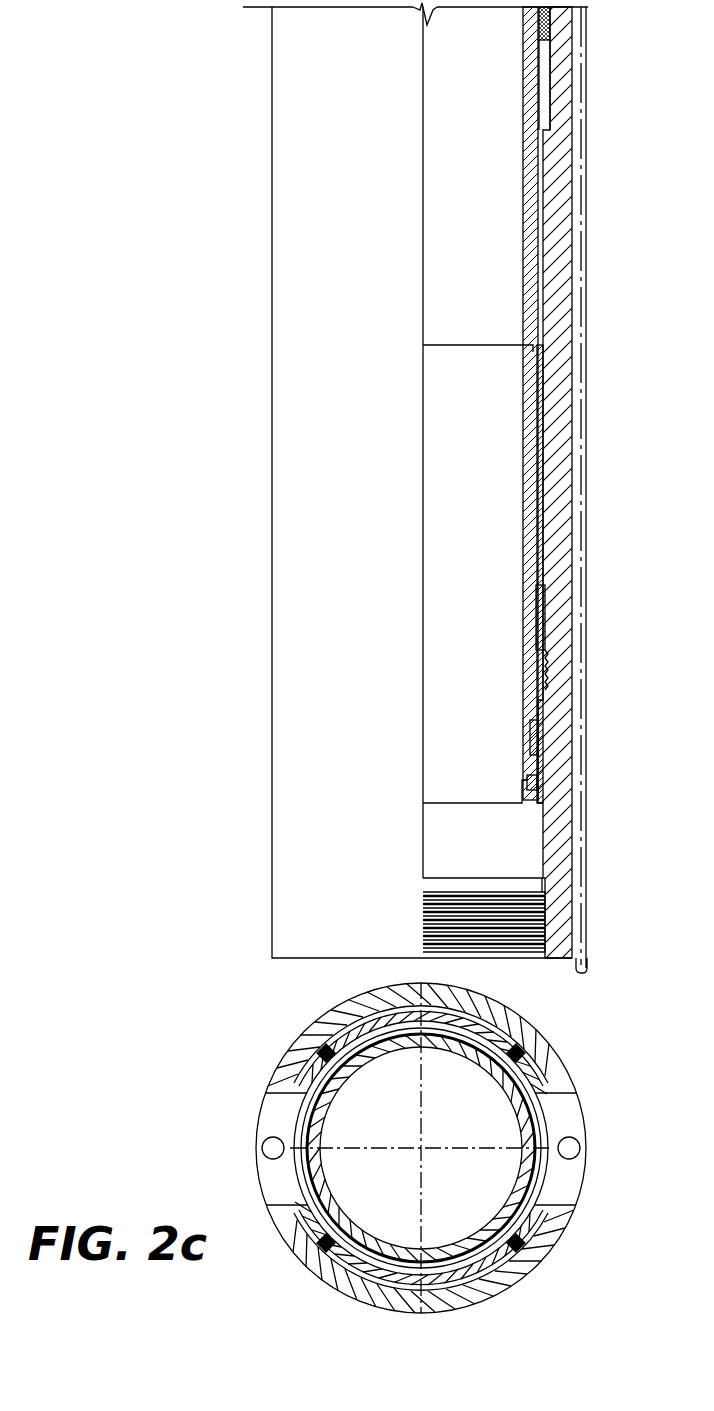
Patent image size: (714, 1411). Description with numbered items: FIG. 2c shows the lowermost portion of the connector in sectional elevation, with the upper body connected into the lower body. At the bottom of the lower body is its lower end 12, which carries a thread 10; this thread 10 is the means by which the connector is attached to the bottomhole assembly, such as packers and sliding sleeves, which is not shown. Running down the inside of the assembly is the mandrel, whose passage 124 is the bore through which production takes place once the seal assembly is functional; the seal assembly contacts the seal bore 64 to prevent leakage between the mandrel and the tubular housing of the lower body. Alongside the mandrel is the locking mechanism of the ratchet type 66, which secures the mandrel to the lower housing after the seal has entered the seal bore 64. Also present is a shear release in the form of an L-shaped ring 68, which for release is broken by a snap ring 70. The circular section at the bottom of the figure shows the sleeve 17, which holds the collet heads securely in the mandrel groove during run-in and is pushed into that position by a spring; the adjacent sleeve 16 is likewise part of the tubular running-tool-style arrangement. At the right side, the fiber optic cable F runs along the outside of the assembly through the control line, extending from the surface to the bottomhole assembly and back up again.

The thread 10 is at (546, 936).
The lower end 12 is at (272, 960).
The sleeve 16 is at (298, 1052).
The sleeve 17 is at (305, 1092).
The seal bore 64 is at (548, 66).
The locking mechanism of the ratchet type 66 is at (549, 643).
The L-shaped ring 68 is at (538, 743).
The snap ring 70 is at (530, 780).
The passage 124 is at (492, 141).
The fiber optic cable F is at (584, 250).